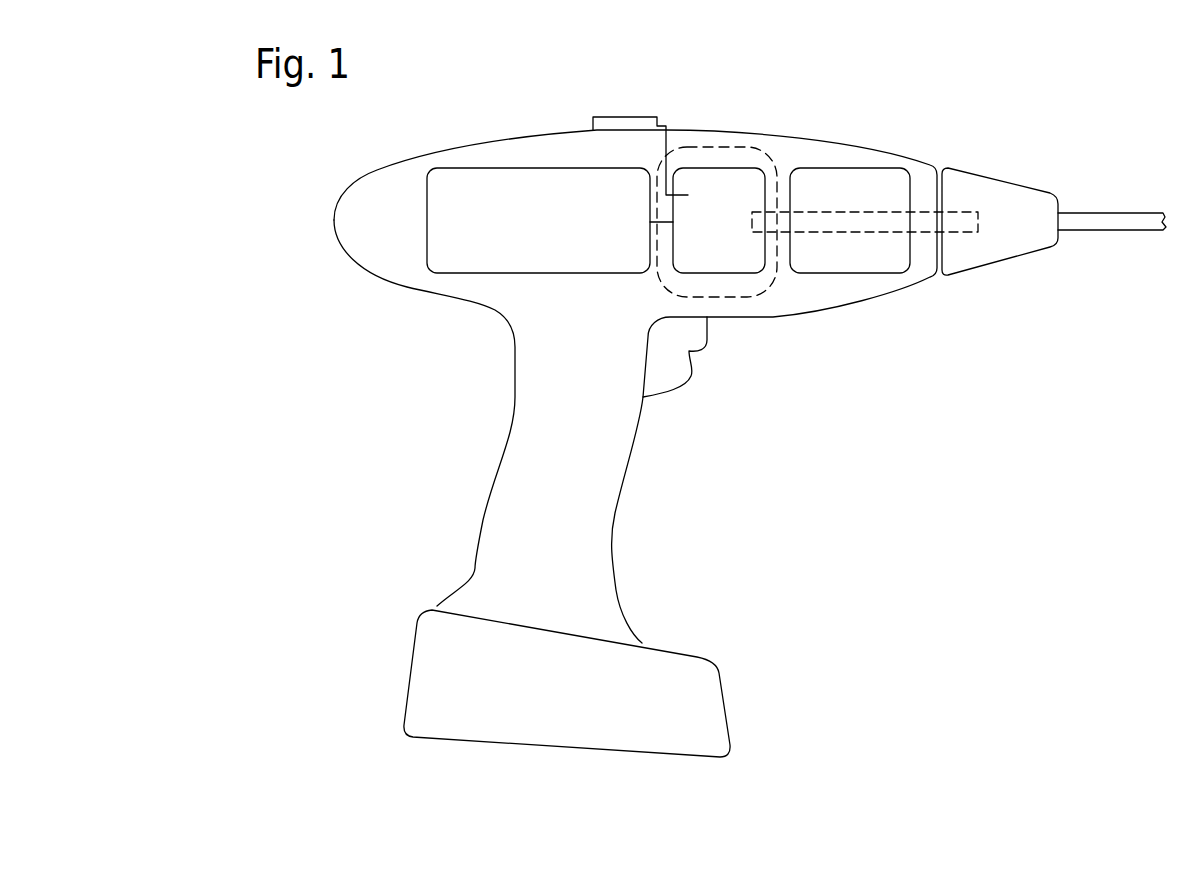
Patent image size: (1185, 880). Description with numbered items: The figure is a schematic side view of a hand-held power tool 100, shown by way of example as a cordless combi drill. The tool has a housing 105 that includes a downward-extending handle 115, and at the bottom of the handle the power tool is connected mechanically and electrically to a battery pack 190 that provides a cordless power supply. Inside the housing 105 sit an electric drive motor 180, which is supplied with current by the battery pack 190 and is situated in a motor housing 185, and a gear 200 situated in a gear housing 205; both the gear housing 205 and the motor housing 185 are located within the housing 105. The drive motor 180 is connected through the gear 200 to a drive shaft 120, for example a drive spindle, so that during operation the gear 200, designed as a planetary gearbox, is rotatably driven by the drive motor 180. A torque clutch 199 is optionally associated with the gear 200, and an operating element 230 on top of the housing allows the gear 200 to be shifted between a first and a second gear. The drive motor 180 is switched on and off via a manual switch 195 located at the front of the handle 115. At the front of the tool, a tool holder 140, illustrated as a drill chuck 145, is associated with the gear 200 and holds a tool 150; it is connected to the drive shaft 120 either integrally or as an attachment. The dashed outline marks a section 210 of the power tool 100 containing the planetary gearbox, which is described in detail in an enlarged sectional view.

The hand-held power tool 100 is at (1065, 126).
The housing 105 is at (356, 218).
The handle 115 is at (514, 470).
The drive shaft 120 is at (782, 220).
The tool holder 140 is at (1005, 237).
The drill chuck 145 is at (1016, 185).
The tool 150 is at (1117, 222).
The drive motor 180 is at (512, 207).
The motor housing 185 is at (470, 167).
The battery pack 190 is at (434, 665).
The manual switch 195 is at (675, 338).
The torque clutch 199 is at (847, 186).
The gear 200 is at (713, 186).
The gear housing 205 is at (745, 275).
The section 210 is at (722, 297).
The operating element 230 is at (623, 117).